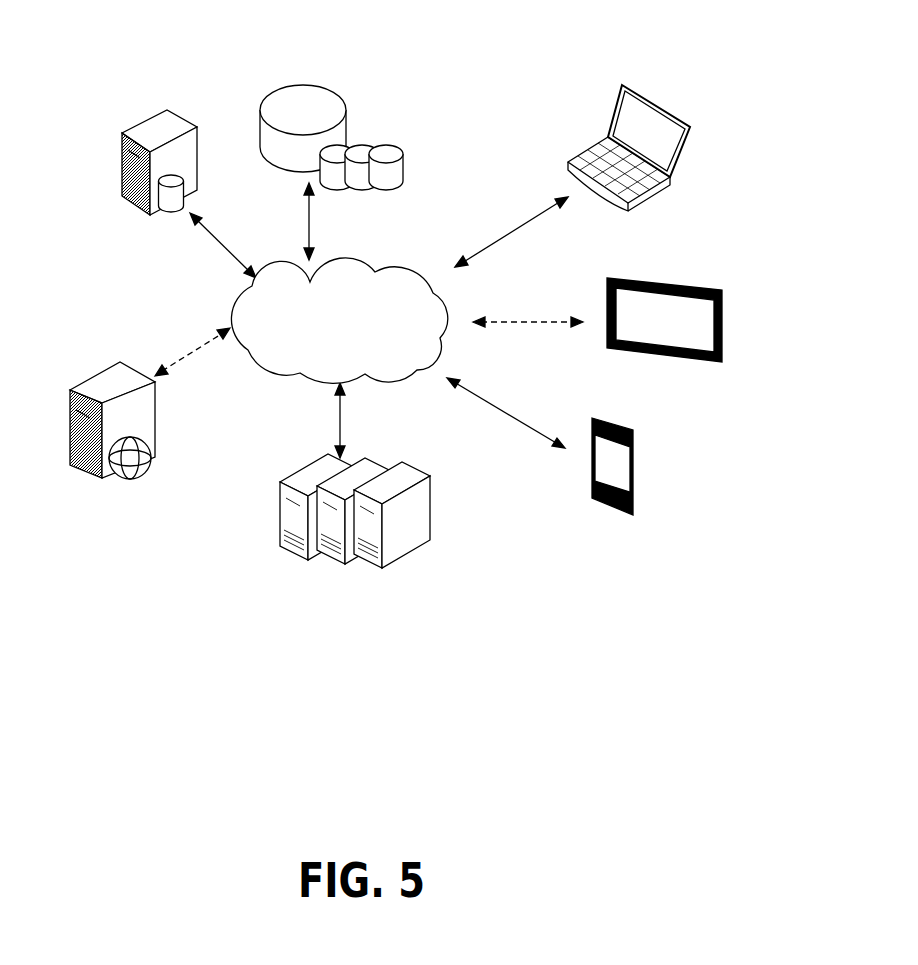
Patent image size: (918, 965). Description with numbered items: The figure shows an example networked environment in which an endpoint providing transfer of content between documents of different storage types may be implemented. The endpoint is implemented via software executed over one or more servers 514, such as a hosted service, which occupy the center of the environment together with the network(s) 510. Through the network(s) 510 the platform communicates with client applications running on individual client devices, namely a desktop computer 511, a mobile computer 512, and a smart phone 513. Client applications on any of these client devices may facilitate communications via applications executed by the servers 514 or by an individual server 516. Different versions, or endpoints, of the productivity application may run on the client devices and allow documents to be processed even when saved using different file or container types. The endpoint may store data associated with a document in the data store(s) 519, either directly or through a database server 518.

The network(s) 510 is at (351, 242).
The desktop computer 511 is at (668, 79).
The mobile computer 512 is at (701, 255).
The smart phone 513 is at (645, 426).
The servers 514 is at (302, 453).
The individual server 516 is at (89, 362).
The database server 518 is at (159, 230).
The data store(s) 519 is at (323, 57).